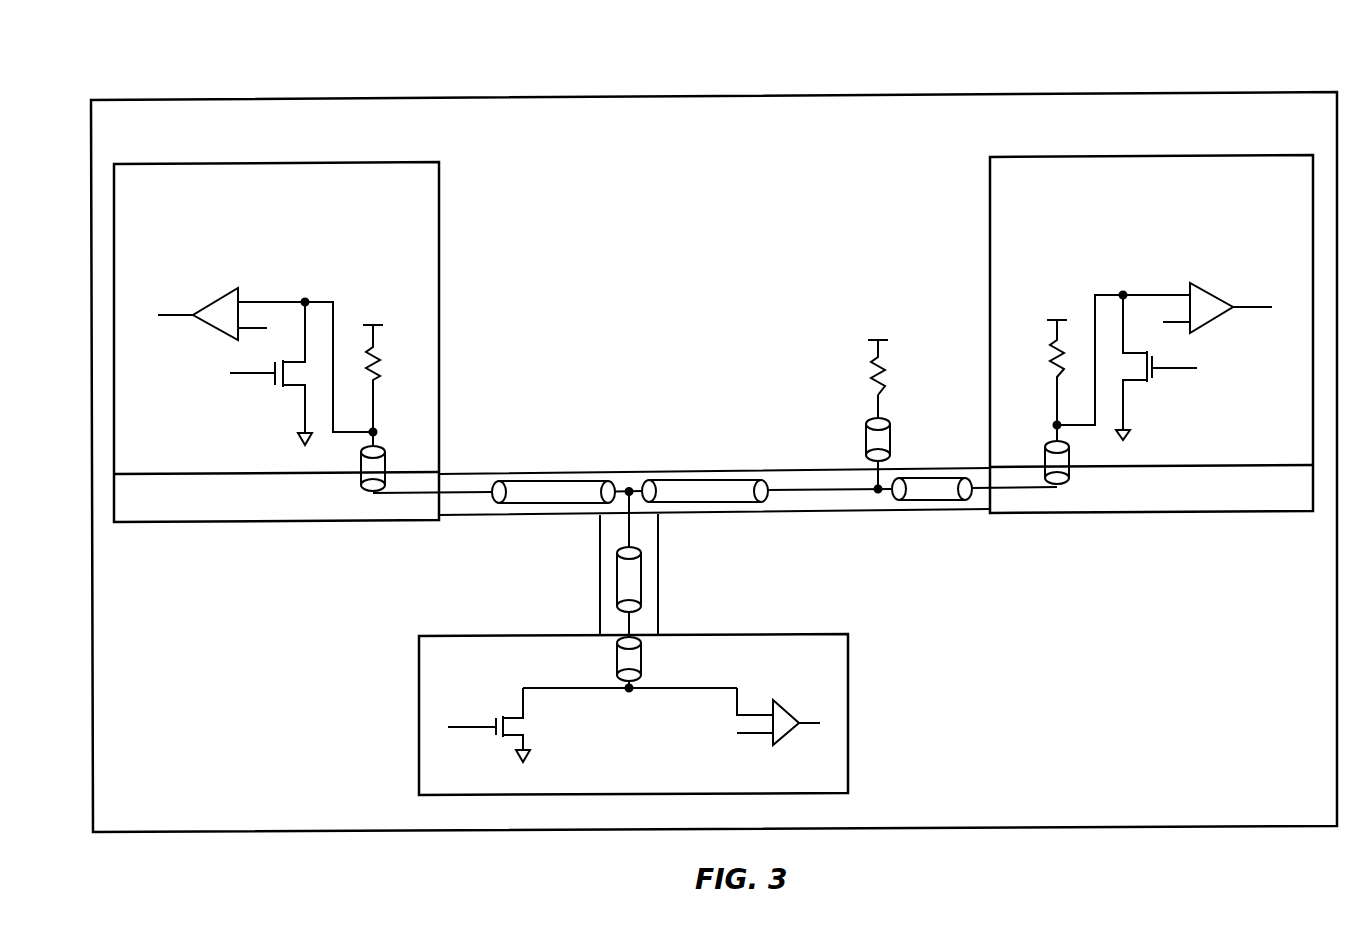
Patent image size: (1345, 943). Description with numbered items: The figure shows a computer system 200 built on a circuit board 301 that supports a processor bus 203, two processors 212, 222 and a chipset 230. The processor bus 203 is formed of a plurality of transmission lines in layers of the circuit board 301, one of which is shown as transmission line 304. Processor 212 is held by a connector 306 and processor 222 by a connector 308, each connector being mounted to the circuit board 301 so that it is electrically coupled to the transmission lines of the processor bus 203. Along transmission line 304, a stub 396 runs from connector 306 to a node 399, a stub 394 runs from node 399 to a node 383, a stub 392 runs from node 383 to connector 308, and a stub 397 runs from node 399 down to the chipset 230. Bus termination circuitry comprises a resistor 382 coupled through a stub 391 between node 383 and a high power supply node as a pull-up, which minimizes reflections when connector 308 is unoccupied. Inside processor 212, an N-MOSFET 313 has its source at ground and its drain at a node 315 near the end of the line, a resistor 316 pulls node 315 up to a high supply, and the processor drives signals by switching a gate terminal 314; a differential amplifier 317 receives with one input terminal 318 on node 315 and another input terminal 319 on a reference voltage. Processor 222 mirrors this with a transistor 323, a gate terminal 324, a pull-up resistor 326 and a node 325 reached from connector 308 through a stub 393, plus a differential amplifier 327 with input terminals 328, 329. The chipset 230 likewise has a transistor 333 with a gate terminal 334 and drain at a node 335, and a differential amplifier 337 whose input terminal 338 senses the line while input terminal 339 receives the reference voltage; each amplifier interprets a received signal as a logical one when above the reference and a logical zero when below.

The computer system 200 is at (357, 66).
The circuit board 301 is at (712, 93).
The processor 212 is at (440, 255).
The processor 222 is at (1158, 155).
The chipset 230 is at (850, 700).
The connector 306 is at (197, 522).
The connector 308 is at (1144, 517).
The processor bus 203 is at (458, 472).
The transmission line 304 is at (620, 487).
The node 399 is at (632, 487).
The stub 396 is at (548, 480).
The stub 394 is at (702, 480).
The stub 392 is at (950, 502).
The stub 397 is at (642, 582).
The stub 391 is at (892, 433).
The resistor 382 is at (883, 365).
The node 383 is at (878, 492).
The differential amplifier 317 is at (215, 297).
The input terminal 318 is at (265, 300).
The input terminal 319 is at (252, 332).
The N-MOSFET 313 is at (295, 388).
The gate terminal 314 is at (242, 377).
The resistor 316 is at (375, 343).
The node 315 is at (374, 428).
The differential amplifier 327 is at (1213, 290).
The input terminal 328 is at (1150, 293).
The input terminal 329 is at (1170, 323).
The N-MOSFET 323 is at (1133, 385).
The gate terminal 324 is at (1173, 370).
The resistor 326 is at (1053, 335).
The node 325 is at (1055, 422).
The stub 393 is at (1068, 462).
The node 335 is at (630, 690).
The N-MOSFET 333 is at (513, 738).
The gate terminal 334 is at (468, 725).
The differential amplifier 337 is at (780, 703).
The input terminal 338 is at (753, 715).
The input terminal 339 is at (747, 737).